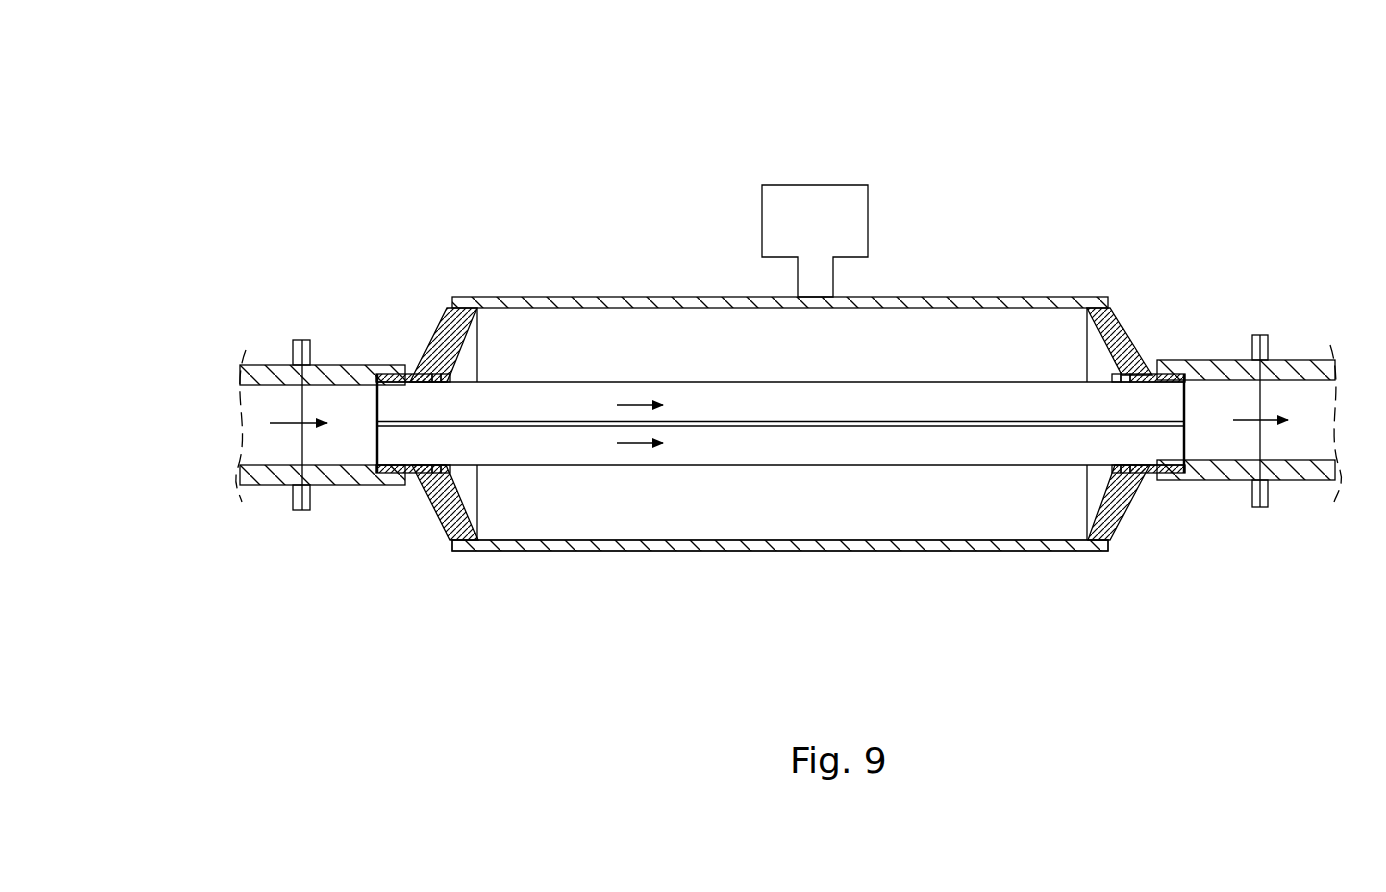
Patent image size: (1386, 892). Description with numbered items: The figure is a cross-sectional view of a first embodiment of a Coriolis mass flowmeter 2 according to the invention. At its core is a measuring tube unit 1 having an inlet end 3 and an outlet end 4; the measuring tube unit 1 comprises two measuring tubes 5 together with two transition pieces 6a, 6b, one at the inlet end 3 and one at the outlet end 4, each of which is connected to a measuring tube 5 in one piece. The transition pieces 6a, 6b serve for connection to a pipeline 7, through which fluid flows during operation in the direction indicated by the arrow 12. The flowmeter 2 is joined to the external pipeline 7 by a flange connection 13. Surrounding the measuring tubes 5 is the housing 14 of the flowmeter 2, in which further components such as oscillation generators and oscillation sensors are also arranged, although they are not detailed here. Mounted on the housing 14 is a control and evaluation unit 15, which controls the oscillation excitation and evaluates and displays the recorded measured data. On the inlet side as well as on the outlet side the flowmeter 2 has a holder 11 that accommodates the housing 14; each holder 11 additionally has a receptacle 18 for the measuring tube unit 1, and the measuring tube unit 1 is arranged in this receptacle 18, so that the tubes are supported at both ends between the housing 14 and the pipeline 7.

The measuring tube unit 1 is at (640, 343).
The Coriolis mass flowmeter 2 is at (603, 187).
The inlet end 3 is at (358, 542).
The outlet end 4 is at (1187, 510).
The measuring tube 5 is at (988, 445).
The transition piece 6a is at (395, 412).
The transition piece 6b is at (1177, 397).
The pipeline 7 is at (330, 400).
The holder 11 is at (430, 323).
The arrow 12 is at (288, 423).
The flange connection 13 is at (302, 340).
The housing 14 is at (1077, 549).
The control and evaluation unit 15 is at (847, 202).
The receptacle 18 is at (435, 474).